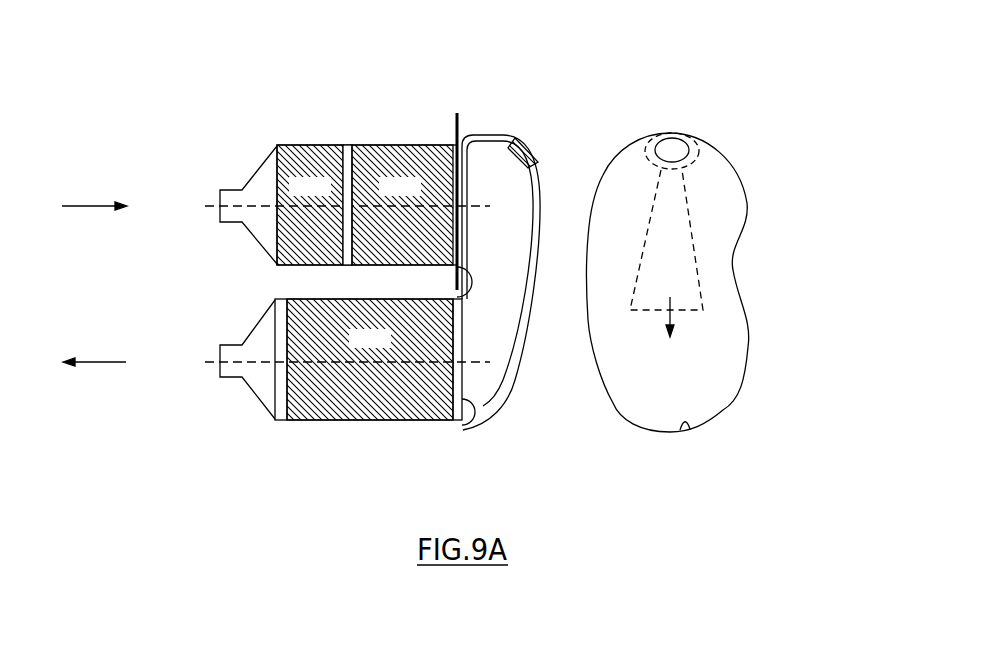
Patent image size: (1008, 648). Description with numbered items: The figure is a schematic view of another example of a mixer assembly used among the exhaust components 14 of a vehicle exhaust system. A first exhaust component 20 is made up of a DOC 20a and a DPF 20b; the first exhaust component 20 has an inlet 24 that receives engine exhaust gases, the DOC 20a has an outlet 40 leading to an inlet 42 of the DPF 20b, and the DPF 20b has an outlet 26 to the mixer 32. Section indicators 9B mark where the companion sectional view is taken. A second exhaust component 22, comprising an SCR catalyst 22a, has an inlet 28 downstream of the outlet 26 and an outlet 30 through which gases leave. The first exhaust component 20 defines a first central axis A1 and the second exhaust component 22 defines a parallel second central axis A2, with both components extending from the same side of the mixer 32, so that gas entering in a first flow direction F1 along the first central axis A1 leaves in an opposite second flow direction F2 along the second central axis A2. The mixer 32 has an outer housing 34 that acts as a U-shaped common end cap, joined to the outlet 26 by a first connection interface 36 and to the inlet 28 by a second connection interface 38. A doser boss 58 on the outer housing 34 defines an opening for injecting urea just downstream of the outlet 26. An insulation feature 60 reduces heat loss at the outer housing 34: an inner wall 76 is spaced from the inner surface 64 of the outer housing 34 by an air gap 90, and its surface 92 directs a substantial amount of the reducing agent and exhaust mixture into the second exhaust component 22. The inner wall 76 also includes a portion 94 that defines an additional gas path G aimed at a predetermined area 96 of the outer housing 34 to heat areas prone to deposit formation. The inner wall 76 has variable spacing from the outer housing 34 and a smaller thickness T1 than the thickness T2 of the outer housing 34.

The exhaust components 14 is at (300, 79).
The first exhaust component 20 is at (407, 78).
The DOC 20a is at (290, 145).
The outlet 40 is at (346, 152).
The DPF 20b is at (370, 148).
The outlet 26 is at (462, 136).
The section line 9B is at (445, 128).
The inlet 42 is at (345, 256).
The inlet 24 is at (232, 196).
The first central axis A1 is at (212, 213).
The first flow direction F1 is at (90, 206).
The second exhaust component 22 is at (290, 462).
The SCR catalyst 22a is at (372, 413).
The inlet 28 is at (455, 416).
The outlet pipe 30 is at (223, 378).
The second central axis A2 is at (211, 346).
The second flow direction F2 is at (95, 362).
The outer housing 34 is at (605, 177).
The first connection interface 36 is at (466, 173).
The inner wall 76 is at (540, 228).
The doser boss 58 is at (529, 146).
The thickness T2 is at (493, 353).
The thickness T1 is at (477, 377).
The second connection interface 38 is at (466, 413).
The insulation feature 60 is at (517, 413).
The mixer 32 is at (615, 124).
The air gap 90 is at (717, 177).
The inner surface 64 is at (745, 178).
The surface 92 is at (696, 232).
The additional gas path G is at (673, 315).
The portion 94 is at (632, 302).
The predetermined area 96 is at (687, 430).